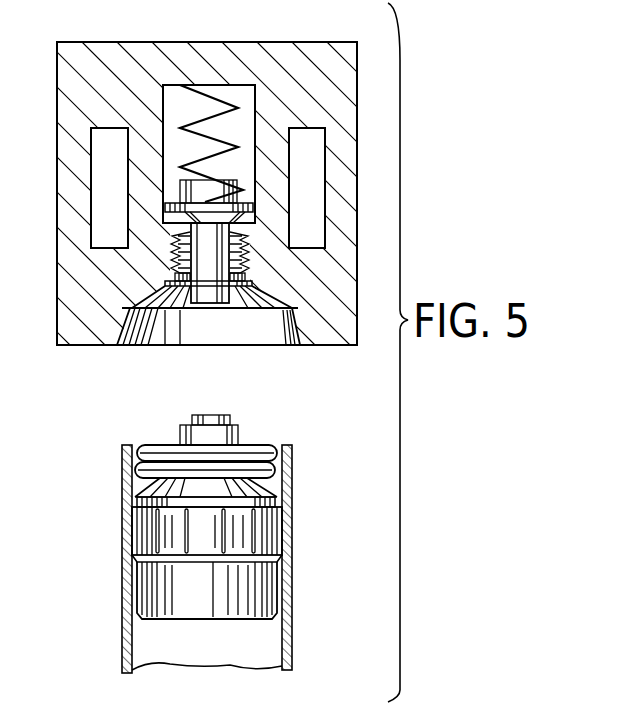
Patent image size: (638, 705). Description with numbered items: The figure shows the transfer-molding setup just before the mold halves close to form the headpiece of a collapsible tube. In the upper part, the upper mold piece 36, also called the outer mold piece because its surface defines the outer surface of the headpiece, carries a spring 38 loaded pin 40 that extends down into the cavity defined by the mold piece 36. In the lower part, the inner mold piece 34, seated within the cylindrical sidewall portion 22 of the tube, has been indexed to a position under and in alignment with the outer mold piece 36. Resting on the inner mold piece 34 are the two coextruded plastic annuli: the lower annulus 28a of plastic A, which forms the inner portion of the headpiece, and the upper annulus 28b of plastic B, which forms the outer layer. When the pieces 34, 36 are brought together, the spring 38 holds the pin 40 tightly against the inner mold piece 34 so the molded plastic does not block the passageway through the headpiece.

The upper mold piece 36 is at (139, 30).
The spring 38 is at (210, 97).
The pin 40 is at (212, 292).
The cylindrical sidewall portion 22 is at (292, 580).
The lower annulus 28a is at (273, 472).
The upper annulus 28b is at (263, 445).
The inner mold piece 34 is at (160, 486).